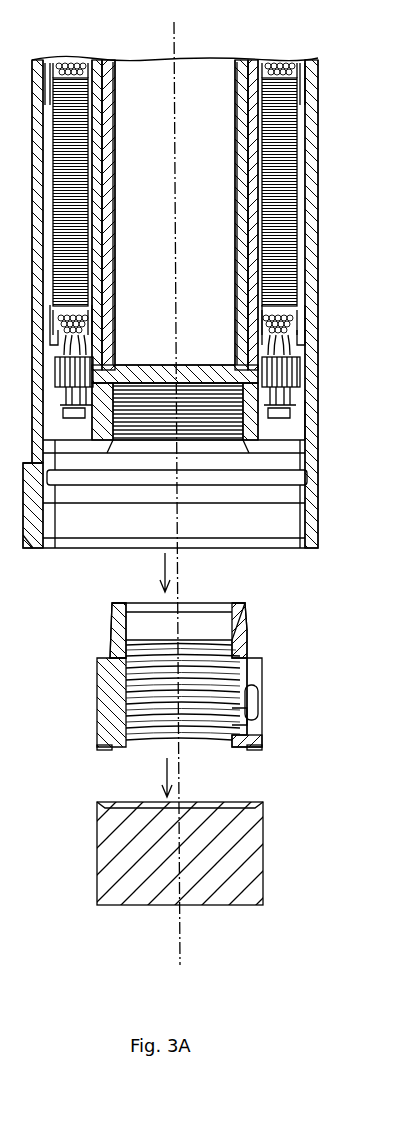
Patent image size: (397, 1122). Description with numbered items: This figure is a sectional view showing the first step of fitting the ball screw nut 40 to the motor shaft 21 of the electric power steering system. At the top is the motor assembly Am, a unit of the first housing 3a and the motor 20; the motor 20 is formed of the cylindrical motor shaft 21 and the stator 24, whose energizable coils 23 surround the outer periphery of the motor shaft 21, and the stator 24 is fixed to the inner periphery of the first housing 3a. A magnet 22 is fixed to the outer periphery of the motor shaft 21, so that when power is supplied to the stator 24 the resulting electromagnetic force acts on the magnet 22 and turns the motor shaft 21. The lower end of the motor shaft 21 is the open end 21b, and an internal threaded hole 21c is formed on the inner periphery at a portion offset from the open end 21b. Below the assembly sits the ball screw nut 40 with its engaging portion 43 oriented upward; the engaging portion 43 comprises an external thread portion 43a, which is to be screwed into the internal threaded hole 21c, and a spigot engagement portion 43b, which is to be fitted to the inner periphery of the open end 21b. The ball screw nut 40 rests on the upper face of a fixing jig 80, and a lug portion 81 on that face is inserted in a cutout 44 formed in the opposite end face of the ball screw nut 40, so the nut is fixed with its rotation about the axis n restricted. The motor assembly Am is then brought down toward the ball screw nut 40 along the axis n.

The motor 20 is at (312, 222).
The motor shaft 21 is at (238, 241).
The open end 21b is at (245, 441).
The internal threaded hole 21c is at (212, 377).
The magnet 22 is at (243, 206).
The coils 23 is at (300, 334).
The stator 24 is at (305, 191).
The first housing 3a is at (320, 410).
The motor assembly Am is at (341, 515).
The ball screw nut 40 is at (264, 700).
The engaging portion 43 is at (322, 612).
The external thread portion 43a is at (246, 618).
The spigot engagement portion 43b is at (246, 646).
The cutout 44 is at (262, 750).
The fixing jig 80 is at (264, 877).
The lug portion 81 is at (87, 807).
The axis n is at (180, 950).